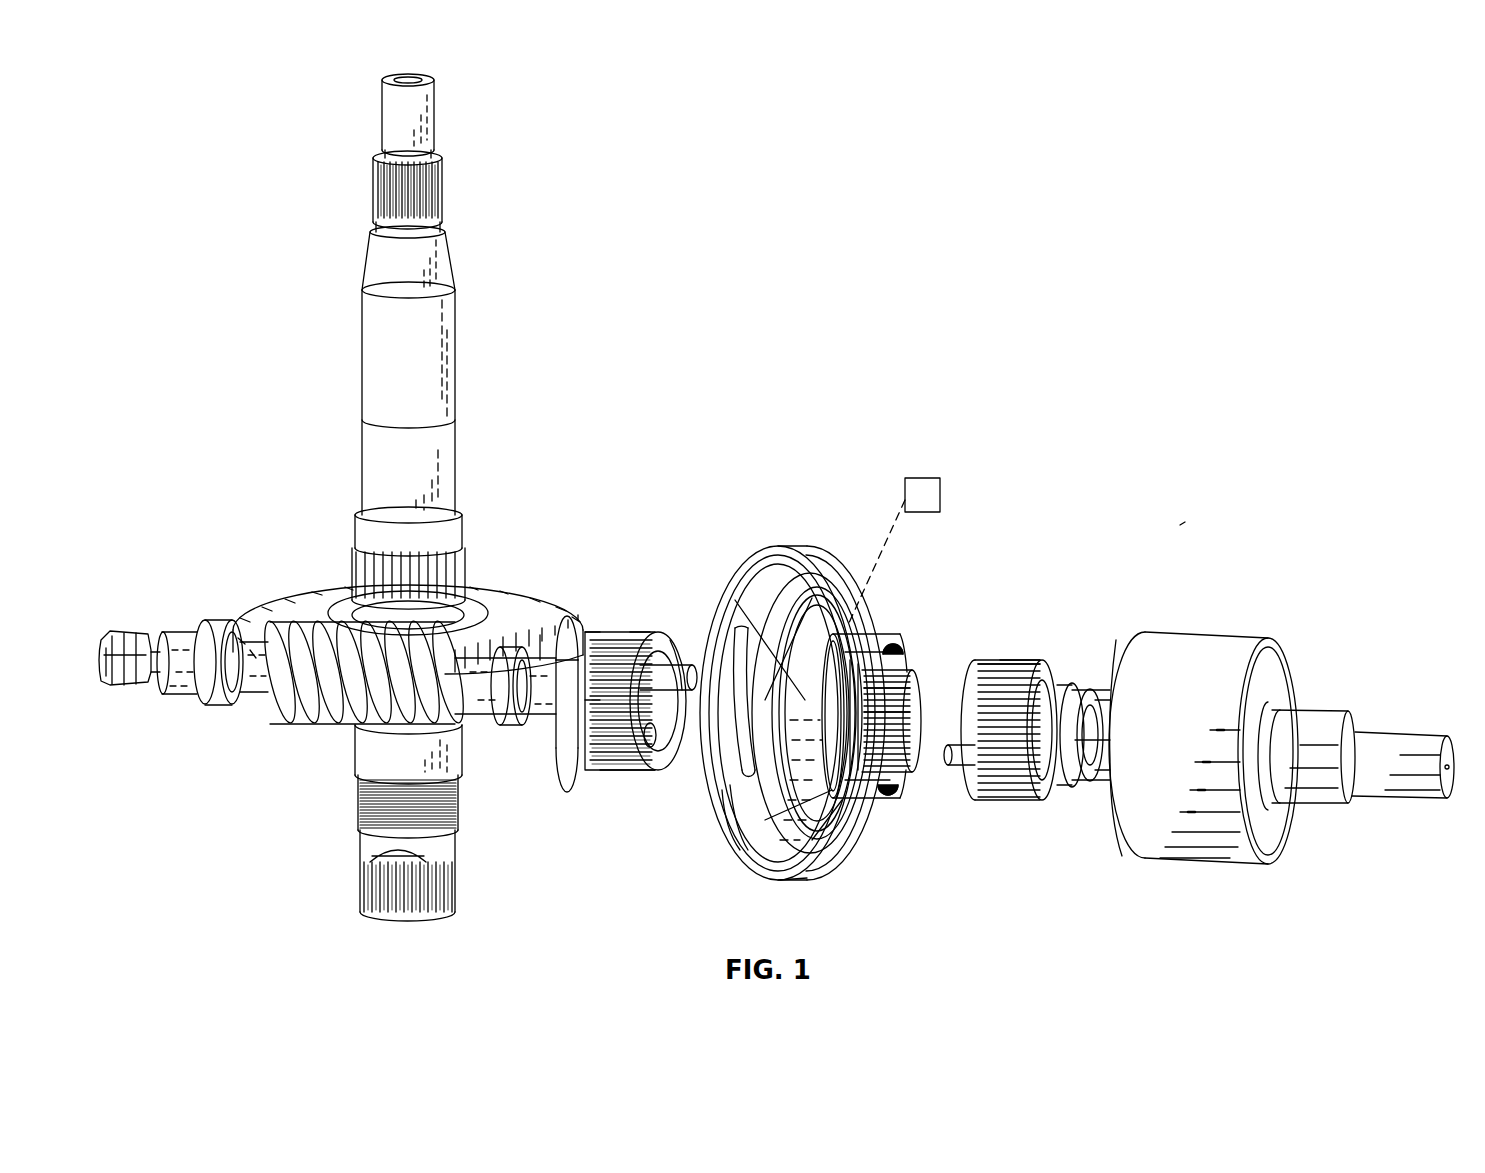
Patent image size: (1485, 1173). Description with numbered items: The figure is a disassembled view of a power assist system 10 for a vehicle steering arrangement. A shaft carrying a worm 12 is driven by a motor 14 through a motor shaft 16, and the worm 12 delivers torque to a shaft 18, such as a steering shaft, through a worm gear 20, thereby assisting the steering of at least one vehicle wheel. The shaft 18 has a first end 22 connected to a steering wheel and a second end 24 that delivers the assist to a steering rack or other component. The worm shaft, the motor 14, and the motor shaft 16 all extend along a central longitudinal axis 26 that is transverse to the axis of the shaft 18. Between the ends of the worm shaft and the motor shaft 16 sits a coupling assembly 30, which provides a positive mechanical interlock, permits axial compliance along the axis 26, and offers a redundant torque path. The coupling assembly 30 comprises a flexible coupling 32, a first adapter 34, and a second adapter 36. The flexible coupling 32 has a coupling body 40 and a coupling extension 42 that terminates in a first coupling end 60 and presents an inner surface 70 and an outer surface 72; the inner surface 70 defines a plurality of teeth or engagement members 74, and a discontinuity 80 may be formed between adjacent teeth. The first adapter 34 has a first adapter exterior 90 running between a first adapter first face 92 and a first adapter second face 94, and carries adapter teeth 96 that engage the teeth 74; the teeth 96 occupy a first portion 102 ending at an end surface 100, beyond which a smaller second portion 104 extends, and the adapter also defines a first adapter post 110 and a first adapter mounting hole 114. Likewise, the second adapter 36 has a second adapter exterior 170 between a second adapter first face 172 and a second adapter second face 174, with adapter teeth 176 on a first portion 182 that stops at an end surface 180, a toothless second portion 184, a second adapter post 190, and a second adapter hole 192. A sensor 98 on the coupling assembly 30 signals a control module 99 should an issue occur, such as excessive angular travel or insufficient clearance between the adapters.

The power assist system 10 is at (1182, 526).
The worm 12 is at (303, 624).
The motor 14 is at (1284, 716).
The motor shaft 16 is at (1107, 767).
The shaft 18 is at (486, 438).
The worm gear 20 is at (315, 574).
The first end 22 is at (437, 160).
The second end 24 is at (460, 790).
The central longitudinal axis 26 is at (1457, 770).
The coupling assembly 30 is at (1083, 474).
The flexible coupling 32 is at (832, 874).
The first adapter 34 is at (993, 802).
The second adapter 36 is at (600, 768).
The coupling body 40 is at (796, 556).
The coupling extension 42 is at (898, 636).
The first coupling end 60 is at (915, 672).
The inner surface 70 is at (922, 718).
The outer surface 72 is at (920, 695).
The plurality of teeth or engagement members 74 is at (908, 770).
The discontinuity 80 is at (908, 645).
The first adapter exterior 90 is at (1065, 790).
The first adapter first face 92 is at (1000, 660).
The first adapter second face 94 is at (1092, 690).
The plurality of adapter teeth or adapter engagement members 96 is at (1026, 660).
The sensor 98 is at (775, 590).
The control module 99 is at (940, 503).
The end surface 100 is at (1078, 680).
The first portion 102 is at (1038, 800).
The second portion 104 is at (1090, 790).
The first adapter post 110 is at (962, 780).
The first adapter mounting hole 114 is at (1108, 700).
The second adapter exterior 170 is at (604, 628).
The second adapter first face 172 is at (668, 630).
The second adapter second face 174 is at (540, 632).
The plurality of adapter teeth or adapter engagement members 176 is at (634, 630).
The end surface 180 is at (590, 640).
The first portion 182 is at (620, 778).
The second portion 184 is at (575, 752).
The second adapter post 190 is at (683, 658).
The second adapter hole 192 is at (654, 748).